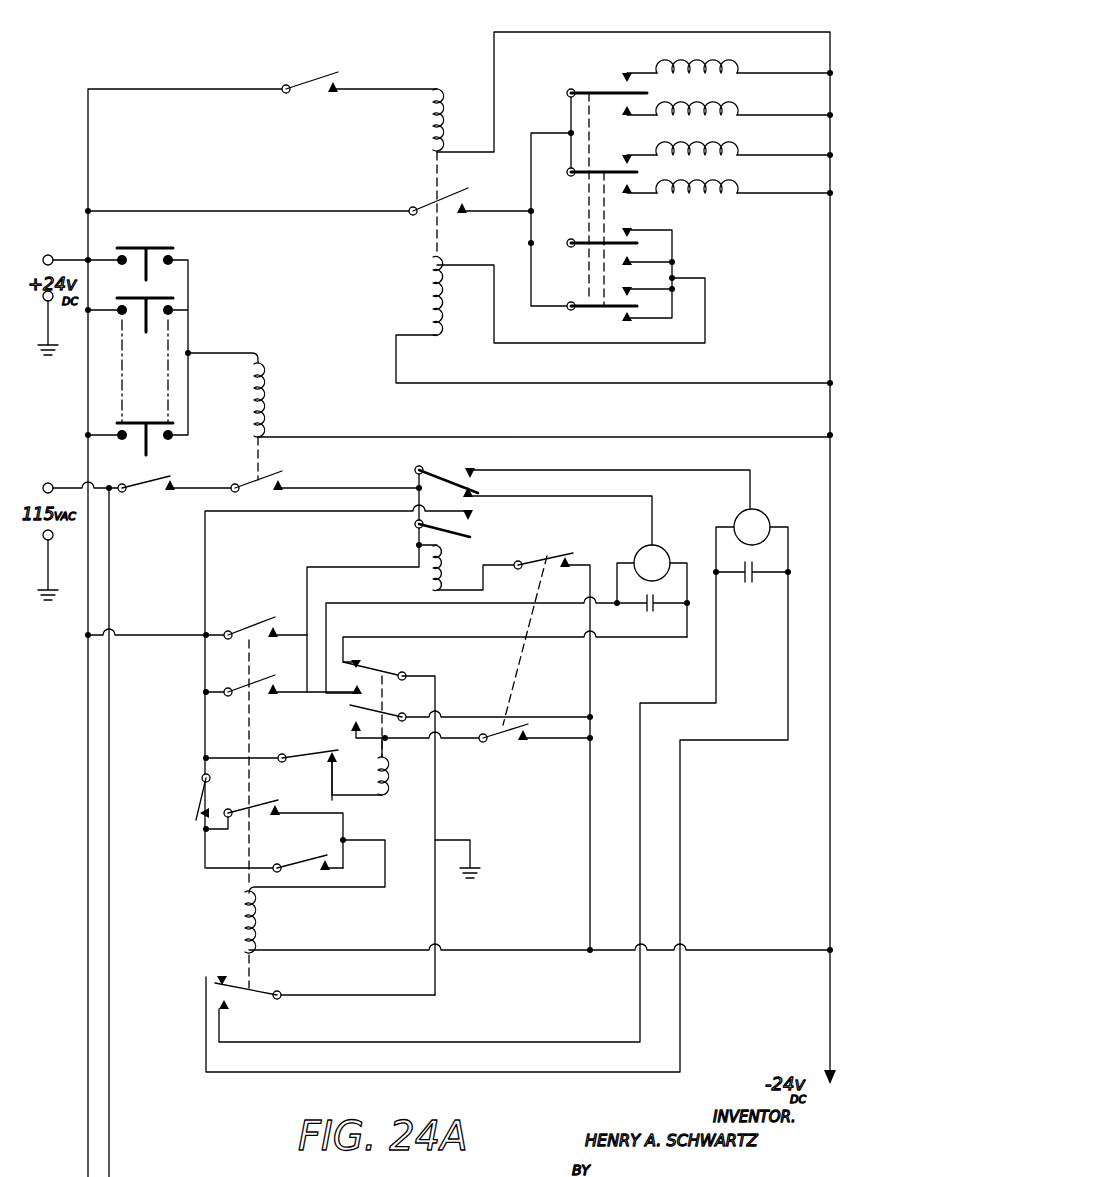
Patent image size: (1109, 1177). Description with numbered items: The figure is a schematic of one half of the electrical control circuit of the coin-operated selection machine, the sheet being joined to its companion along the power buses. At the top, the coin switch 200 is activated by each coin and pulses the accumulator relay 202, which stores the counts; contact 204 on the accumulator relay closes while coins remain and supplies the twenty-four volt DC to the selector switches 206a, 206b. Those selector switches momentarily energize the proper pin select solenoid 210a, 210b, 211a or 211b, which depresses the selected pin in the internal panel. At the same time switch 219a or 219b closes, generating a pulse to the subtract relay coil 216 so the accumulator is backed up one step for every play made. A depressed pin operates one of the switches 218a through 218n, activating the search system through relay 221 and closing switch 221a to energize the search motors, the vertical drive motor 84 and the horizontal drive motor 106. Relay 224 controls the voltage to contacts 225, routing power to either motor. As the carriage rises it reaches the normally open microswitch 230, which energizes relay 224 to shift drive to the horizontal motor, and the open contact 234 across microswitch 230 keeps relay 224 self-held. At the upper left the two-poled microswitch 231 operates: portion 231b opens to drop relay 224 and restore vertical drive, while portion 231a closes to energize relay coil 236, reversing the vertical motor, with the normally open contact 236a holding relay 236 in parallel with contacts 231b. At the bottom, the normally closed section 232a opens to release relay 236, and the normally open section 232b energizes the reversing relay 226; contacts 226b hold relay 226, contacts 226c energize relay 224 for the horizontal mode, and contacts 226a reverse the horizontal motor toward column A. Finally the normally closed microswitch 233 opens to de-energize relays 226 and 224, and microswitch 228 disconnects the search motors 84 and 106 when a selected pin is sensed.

The coin switch 200 is at (310, 85).
The accumulator relay 202 is at (432, 128).
The contact on the accumulator relay 204 is at (428, 200).
The selector switch 206a is at (598, 88).
The selector switch 206b is at (571, 180).
The pin select solenoid 210a is at (745, 66).
The pin select solenoid 210b is at (738, 110).
The pin select solenoid 211a is at (738, 150).
The pin select solenoid 211b is at (738, 190).
The subtract relay coil 216 is at (432, 281).
The switch 218a is at (175, 262).
The switch 218n is at (170, 441).
The switch 219a is at (585, 250).
The switch 219b is at (588, 310).
The relay 221 is at (268, 404).
The switch 221a is at (268, 482).
The relay 224 is at (425, 576).
The contacts 225 is at (422, 467).
The reversing relay 226 is at (258, 930).
The contacts 226a is at (268, 993).
The contacts 226b is at (265, 806).
The contacts 226c is at (258, 696).
The microswitch 228 is at (150, 496).
The microswitch 230 is at (255, 628).
The microswitch 231 is at (520, 660).
The microswitch portion 231a is at (540, 558).
The microswitch portion 231b is at (517, 744).
The normally closed microswitch section 232a is at (320, 748).
The normally open microswitch section 232b is at (305, 860).
The microswitch 233 is at (200, 796).
The open contact 234 is at (475, 534).
The relay coil 236 is at (390, 792).
The normally open contact 236a is at (352, 719).
The vertical drive motor 84 is at (660, 548).
The horizontal drive motor 106 is at (765, 512).